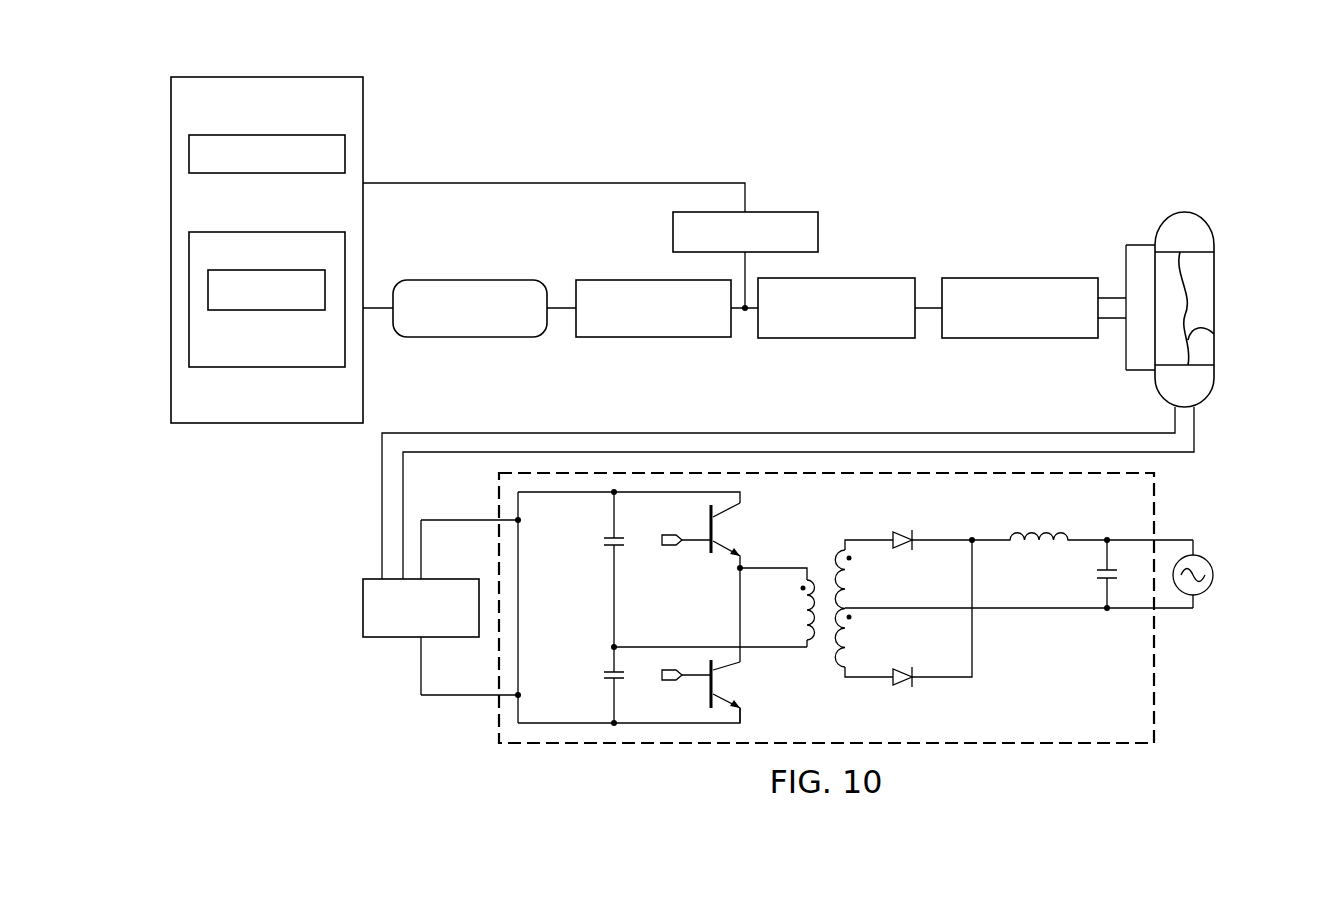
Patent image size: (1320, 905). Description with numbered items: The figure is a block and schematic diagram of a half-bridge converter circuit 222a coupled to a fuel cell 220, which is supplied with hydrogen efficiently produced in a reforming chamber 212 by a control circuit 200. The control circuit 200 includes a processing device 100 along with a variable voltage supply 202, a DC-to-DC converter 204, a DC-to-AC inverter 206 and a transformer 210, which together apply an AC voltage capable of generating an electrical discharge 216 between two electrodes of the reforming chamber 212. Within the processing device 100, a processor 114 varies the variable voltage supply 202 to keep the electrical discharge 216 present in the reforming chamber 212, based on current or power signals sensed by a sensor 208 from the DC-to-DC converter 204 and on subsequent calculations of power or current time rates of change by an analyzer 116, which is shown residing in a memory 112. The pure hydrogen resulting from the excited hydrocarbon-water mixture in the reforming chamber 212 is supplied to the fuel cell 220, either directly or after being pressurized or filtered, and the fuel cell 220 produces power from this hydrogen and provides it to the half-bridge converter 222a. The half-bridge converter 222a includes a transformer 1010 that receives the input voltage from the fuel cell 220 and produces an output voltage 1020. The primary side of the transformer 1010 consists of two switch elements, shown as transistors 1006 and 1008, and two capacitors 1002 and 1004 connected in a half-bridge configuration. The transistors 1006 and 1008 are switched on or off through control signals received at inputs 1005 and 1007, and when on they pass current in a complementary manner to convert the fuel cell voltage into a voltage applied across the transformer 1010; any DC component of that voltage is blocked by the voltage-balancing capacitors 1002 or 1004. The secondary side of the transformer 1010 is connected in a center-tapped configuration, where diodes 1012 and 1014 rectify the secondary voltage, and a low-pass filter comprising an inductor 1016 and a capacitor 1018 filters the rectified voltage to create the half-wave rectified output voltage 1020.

The processing device 100 is at (243, 71).
The memory 112 is at (269, 369).
The processor 114 is at (269, 176).
The analyzer 116 is at (269, 312).
The control circuit 200 is at (441, 97).
The variable voltage supply 202 is at (470, 279).
The DC-to-DC converter 204 is at (644, 279).
The DC-to-AC inverter 206 is at (846, 278).
The sensor 208 is at (759, 210).
The transformer 210 is at (1019, 278).
The reforming chamber 212 is at (1199, 208).
The electrical discharge 216 is at (1214, 334).
The fuel cell 220 is at (392, 640).
The half-bridge converter circuit 222a is at (1162, 669).
The capacitor 1002 is at (602, 539).
The capacitor 1004 is at (602, 675).
The input 1005 is at (668, 548).
The transistor 1006 is at (708, 522).
The input 1007 is at (668, 667).
The transistor 1008 is at (708, 690).
The transformer 1010 is at (812, 580).
The diode 1012 is at (907, 552).
The diode 1014 is at (907, 688).
The inductor 1016 is at (1073, 535).
The capacitor 1018 is at (1095, 572).
The output voltage 1020 is at (1209, 590).